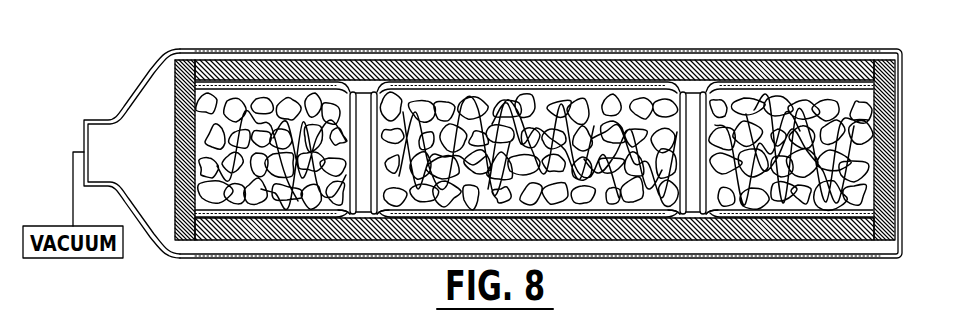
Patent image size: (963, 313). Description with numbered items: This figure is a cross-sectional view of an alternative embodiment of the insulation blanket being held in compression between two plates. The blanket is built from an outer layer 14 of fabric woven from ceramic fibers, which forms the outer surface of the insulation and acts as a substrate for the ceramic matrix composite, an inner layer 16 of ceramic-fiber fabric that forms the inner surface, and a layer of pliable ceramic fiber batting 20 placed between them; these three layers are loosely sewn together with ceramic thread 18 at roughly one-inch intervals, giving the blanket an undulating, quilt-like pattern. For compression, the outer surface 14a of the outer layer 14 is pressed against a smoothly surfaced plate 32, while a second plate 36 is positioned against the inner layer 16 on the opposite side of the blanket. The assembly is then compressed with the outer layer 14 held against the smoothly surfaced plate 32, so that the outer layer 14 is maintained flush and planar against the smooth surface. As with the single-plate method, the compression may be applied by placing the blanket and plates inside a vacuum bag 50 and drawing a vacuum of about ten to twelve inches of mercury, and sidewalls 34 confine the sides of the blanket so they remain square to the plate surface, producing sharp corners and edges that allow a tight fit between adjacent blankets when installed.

The outer layer 14 is at (715, 214).
The outer surface 14a is at (380, 214).
The inner layer 16 is at (714, 91).
The ceramic thread 18 is at (353, 93).
The batting 20 is at (463, 100).
The smoothly surfaced plate 32 is at (580, 241).
The sidewalls 34 is at (882, 65).
The second plate 36 is at (792, 62).
The vacuum bag 50 is at (146, 81).